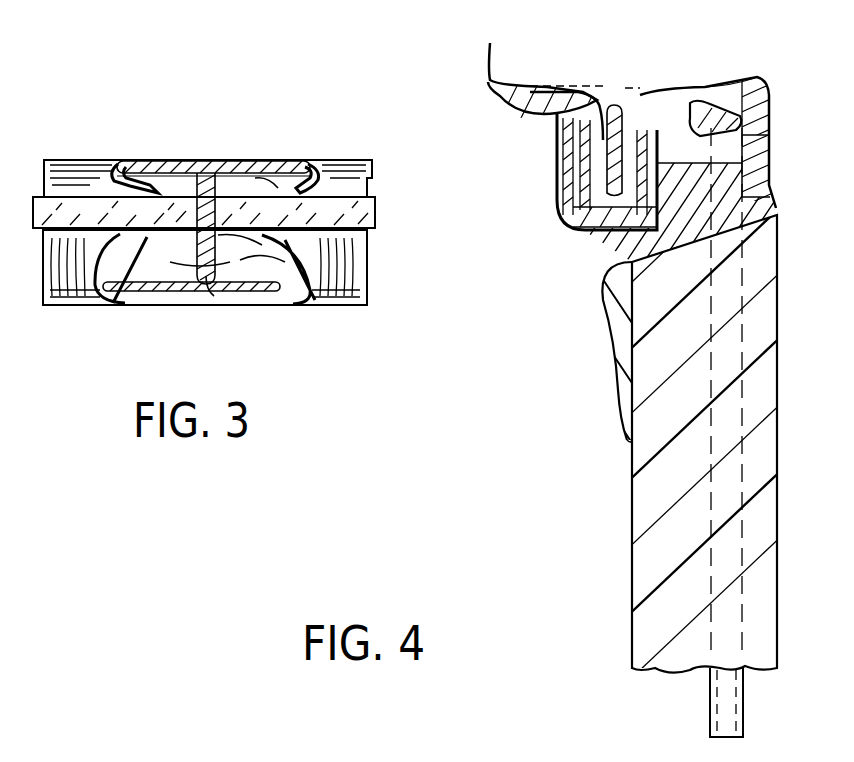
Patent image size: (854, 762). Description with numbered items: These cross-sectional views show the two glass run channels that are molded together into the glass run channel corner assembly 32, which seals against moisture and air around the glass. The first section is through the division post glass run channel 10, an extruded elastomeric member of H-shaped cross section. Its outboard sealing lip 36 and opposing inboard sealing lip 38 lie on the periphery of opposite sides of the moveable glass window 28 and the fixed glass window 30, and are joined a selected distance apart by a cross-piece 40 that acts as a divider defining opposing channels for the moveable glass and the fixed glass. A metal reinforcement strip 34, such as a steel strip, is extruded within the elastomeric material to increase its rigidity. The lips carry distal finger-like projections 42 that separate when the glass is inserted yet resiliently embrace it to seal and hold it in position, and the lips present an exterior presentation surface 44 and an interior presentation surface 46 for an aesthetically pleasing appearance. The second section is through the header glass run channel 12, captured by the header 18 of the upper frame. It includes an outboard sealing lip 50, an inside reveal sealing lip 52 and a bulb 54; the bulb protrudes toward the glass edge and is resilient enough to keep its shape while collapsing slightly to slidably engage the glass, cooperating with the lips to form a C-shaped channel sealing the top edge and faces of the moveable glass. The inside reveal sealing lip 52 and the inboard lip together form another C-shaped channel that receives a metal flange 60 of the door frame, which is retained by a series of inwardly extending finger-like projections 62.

In FIG. 3, the division post glass run channel 10 is at (205, 160).
In FIG. 4, the division post glass run channel 10 is at (777, 470).
In FIG. 4, the header glass run channel 12 is at (772, 96).
In FIG. 4, the header 18 is at (768, 77).
In FIG. 3, the glass window 28 is at (43, 208).
In FIG. 3, the fixed glass window 30 is at (360, 217).
In FIG. 4, the glass run channel corner assembly 32 is at (798, 300).
In FIG. 3, the metal reinforcement strip 34 is at (268, 302).
In FIG. 3, the outboard sealing lip 36 is at (120, 176).
In FIG. 3, the inboard sealing lip 38 is at (113, 305).
In FIG. 3, the cross-piece 40 is at (212, 300).
In FIG. 3, the finger-like projections 42 is at (272, 186).
In FIG. 3, the exterior presentation surface 44 is at (178, 158).
In FIG. 3, the interior presentation surface 46 is at (240, 305).
In FIG. 4, the outboard sealing lip 50 is at (745, 160).
In FIG. 4, the inside reveal sealing lip 52 is at (500, 95).
In FIG. 4, the bulb 54 is at (720, 118).
In FIG. 4, the metal flange 60 is at (607, 218).
In FIG. 4, the finger-like projections 62 is at (621, 150).